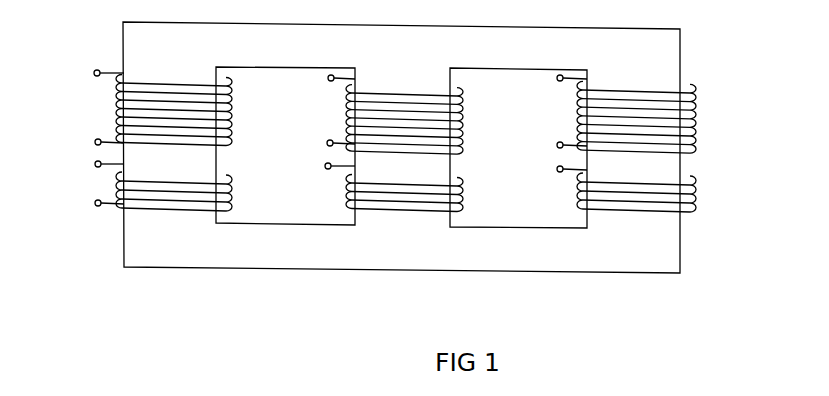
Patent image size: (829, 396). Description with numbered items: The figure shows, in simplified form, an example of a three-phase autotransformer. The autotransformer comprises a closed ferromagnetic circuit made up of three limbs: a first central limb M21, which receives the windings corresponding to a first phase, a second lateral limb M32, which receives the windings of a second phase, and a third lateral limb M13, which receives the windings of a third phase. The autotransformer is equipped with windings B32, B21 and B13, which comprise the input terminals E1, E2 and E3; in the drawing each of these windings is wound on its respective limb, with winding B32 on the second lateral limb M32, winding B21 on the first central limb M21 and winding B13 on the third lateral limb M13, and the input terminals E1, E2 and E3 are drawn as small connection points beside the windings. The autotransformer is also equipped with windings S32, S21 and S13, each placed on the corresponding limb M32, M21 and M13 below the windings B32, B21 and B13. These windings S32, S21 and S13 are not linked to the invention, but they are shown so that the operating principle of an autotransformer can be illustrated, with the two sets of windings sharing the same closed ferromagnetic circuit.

The second lateral limb M32 is at (182, 78).
The winding B32 is at (116, 110).
The winding S32 is at (116, 188).
The first central limb M21 is at (425, 80).
The winding B21 is at (476, 118).
The winding S21 is at (477, 197).
The third lateral limb M13 is at (641, 80).
The winding B13 is at (705, 128).
The winding S13 is at (707, 199).
The input terminal E1 is at (444, 111).
The input terminal E2 is at (208, 108).
The input terminal E3 is at (326, 114).